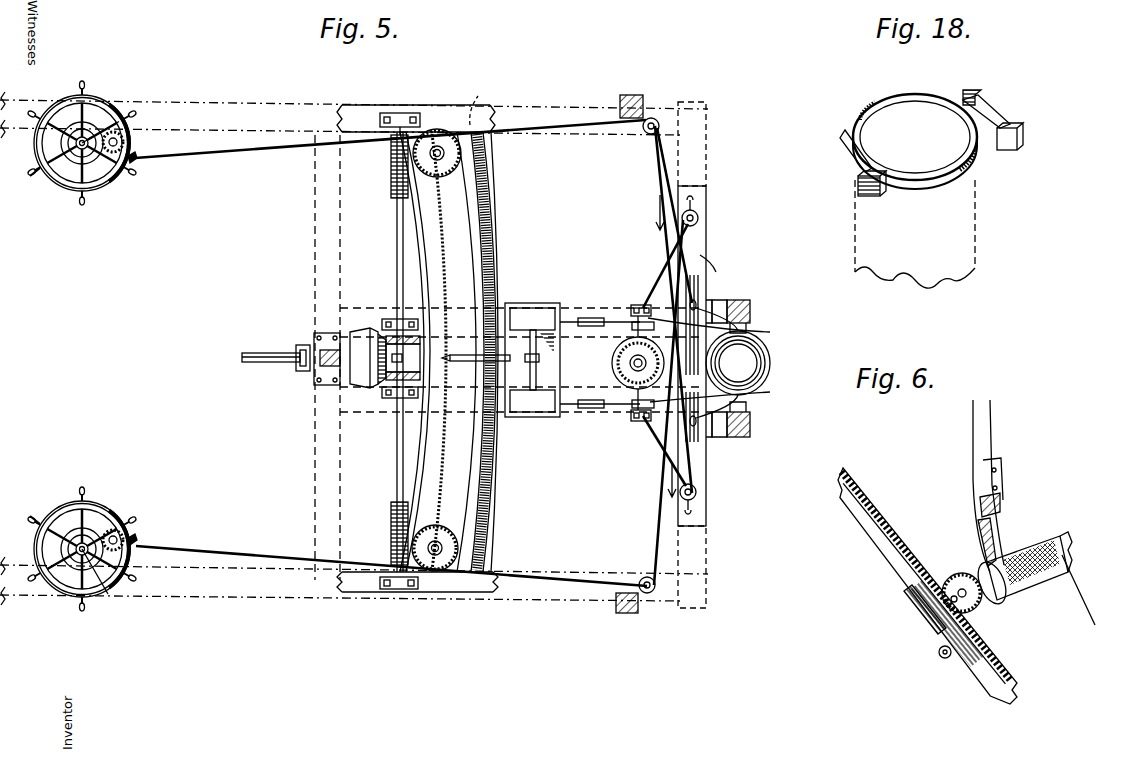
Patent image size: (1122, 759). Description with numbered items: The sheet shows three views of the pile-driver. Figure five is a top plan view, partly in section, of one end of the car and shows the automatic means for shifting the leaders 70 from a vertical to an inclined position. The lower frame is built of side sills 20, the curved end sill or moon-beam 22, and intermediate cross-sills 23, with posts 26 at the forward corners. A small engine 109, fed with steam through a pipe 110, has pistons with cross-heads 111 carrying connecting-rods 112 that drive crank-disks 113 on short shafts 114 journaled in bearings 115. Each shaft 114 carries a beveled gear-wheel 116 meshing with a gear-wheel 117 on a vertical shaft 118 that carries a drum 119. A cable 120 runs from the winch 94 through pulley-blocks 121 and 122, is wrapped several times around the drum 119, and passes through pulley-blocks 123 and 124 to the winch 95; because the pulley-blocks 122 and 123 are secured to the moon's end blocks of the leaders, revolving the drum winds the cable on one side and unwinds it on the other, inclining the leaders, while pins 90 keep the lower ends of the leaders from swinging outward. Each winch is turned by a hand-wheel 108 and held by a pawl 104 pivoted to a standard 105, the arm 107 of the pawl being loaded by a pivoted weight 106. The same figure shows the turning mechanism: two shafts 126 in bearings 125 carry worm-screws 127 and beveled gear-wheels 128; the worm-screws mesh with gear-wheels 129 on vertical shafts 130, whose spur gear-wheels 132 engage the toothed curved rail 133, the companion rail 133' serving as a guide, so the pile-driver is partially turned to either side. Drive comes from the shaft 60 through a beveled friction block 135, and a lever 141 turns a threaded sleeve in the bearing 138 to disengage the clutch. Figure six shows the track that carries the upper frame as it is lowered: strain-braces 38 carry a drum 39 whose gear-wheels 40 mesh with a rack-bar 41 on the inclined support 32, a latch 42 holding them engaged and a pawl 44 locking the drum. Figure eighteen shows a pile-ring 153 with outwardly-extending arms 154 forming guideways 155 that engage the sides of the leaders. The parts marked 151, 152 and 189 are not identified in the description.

In FIG. 5, the side sills 20 is at (238, 112).
In FIG. 5, the end sill (moon-beam) 22 is at (692, 608).
In FIG. 5, the intermediate cross-sills 23 is at (315, 440).
In FIG. 5, the posts 26 is at (636, 96).
In FIG. 6, the forward inclined support 32 is at (892, 565).
In FIG. 6, the strain-braces 38 is at (996, 438).
In FIG. 6, the drum or roller 39 is at (1000, 592).
In FIG. 6, the gear-wheel 40 is at (930, 606).
In FIG. 6, the rack-bar 41 is at (893, 518).
In FIG. 6, the hook or latch 42 is at (945, 659).
In FIG. 6, the pawl or dog 44 is at (955, 575).
In FIG. 5, the shaft 60 is at (256, 363).
In FIG. 5, the leaders 70 is at (750, 306).
In FIG. 5, the pins 90 is at (700, 302).
In FIG. 5, the winch 94 is at (100, 160).
In FIG. 5, the winch 95 is at (88, 540).
In FIG. 5, the pawl 104 is at (110, 118).
In FIG. 5, the standard 105 is at (122, 134).
In FIG. 5, the pivoted weight 106 is at (125, 150).
In FIG. 5, the arm 107 is at (135, 160).
In FIG. 5, the hand-wheels 108 is at (40, 180).
In FIG. 5, the small engine 109 is at (535, 315).
In FIG. 5, the pipe 110 is at (470, 362).
In FIG. 5, the cross-heads 111 is at (575, 318).
In FIG. 5, the connecting-rods 112 is at (586, 318).
In FIG. 5, the crank-disks 113 is at (672, 280).
In FIG. 5, the short shafts 114 is at (640, 304).
In FIG. 5, the bearings 115 is at (638, 422).
In FIG. 5, the beveled gear-wheel 116 is at (612, 362).
In FIG. 5, the gear-wheel 117 is at (700, 370).
In FIG. 5, the vertical shaft 118 is at (705, 352).
In FIG. 5, the drum 119 is at (700, 378).
In FIG. 5, the cable or line 120 is at (245, 150).
In FIG. 5, the pulley-block 121 is at (648, 132).
In FIG. 5, the pulley-block 122 is at (697, 490).
In FIG. 5, the pulley-block 123 is at (699, 220).
In FIG. 5, the pulley-block 124 is at (647, 578).
In FIG. 5, the bearings 125 is at (402, 118).
In FIG. 5, the shafts 126 is at (396, 236).
In FIG. 5, the worm-screw 127 is at (390, 178).
In FIG. 5, the beveled gear-wheel 128 is at (394, 352).
In FIG. 5, the gear-wheels 129 is at (462, 160).
In FIG. 5, the vertical shafts 130 is at (446, 152).
In FIG. 5, the spur gear-wheel 132 is at (470, 140).
In FIG. 5, the curved rail 133 is at (434, 352).
In FIG. 5, the curved rail 133' is at (494, 352).
In FIG. 5, the friction block or head 135 is at (358, 340).
In FIG. 5, the internally-screw-threaded bearing 138 is at (316, 378).
In FIG. 5, the lever 141 is at (300, 372).
In FIG. 5, the ring 151 is at (760, 338).
In FIG. 5, the connector 152 is at (752, 418).
In FIG. 5, the pile-ring 153 is at (752, 314).
In FIG. 18, the pile-ring 153 is at (900, 96).
In FIG. 18, the arms 154 is at (872, 194).
In FIG. 18, the guideways 155 is at (848, 168).
In FIG. 5, the guide 189 is at (702, 258).